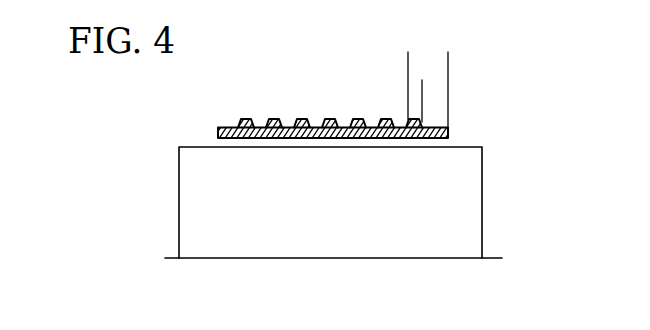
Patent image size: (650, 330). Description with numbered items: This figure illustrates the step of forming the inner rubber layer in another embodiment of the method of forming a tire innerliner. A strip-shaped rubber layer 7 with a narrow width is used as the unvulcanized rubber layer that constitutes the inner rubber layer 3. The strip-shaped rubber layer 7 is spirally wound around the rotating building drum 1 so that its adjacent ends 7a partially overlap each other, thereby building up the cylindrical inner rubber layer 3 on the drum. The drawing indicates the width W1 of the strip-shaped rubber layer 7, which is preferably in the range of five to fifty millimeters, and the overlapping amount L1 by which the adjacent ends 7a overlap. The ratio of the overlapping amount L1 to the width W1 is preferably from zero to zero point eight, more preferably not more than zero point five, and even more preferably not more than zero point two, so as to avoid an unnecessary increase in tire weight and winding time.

The building drum 1 is at (465, 183).
The inner rubber layer 3 is at (334, 119).
The strip-shaped rubber layer 7 is at (278, 120).
The adjacent ends 7a is at (244, 120).
The width of the strip-shaped rubber layer W1 is at (465, 57).
The overlapping amount of the ends L1 is at (437, 87).